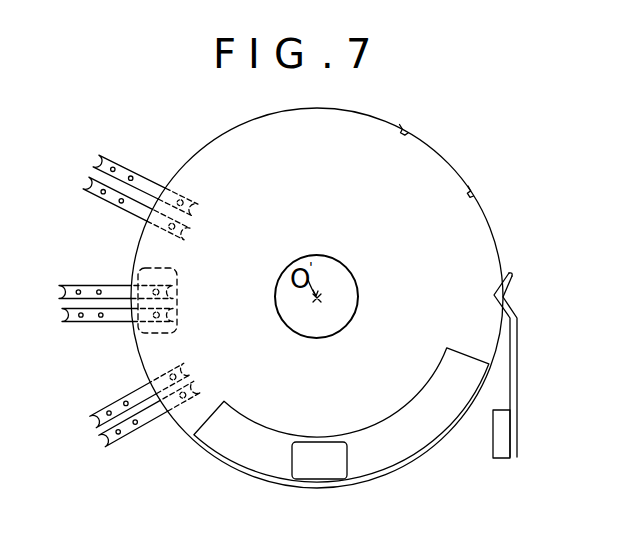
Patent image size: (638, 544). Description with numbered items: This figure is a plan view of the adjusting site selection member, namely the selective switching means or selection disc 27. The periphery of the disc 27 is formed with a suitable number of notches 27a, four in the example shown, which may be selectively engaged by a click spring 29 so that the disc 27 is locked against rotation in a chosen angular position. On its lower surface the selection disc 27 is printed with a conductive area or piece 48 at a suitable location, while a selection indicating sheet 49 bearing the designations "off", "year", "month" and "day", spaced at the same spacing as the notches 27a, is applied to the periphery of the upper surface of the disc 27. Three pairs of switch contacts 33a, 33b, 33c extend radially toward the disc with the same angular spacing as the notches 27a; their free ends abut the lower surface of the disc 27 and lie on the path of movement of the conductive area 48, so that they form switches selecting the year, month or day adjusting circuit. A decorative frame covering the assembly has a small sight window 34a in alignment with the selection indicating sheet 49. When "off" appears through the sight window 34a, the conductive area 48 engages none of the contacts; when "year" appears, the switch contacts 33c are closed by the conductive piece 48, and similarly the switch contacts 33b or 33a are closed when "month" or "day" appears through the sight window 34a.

The selection disc 27 is at (232, 148).
The notches 27a is at (434, 121).
The click spring 29 is at (517, 372).
The switch contacts 33a is at (95, 430).
The switch contacts 33b is at (64, 305).
The switch contacts 33c is at (92, 172).
The sight window 34a is at (302, 441).
The conductive area 48 is at (165, 268).
The selection indicating sheet 49 is at (415, 400).